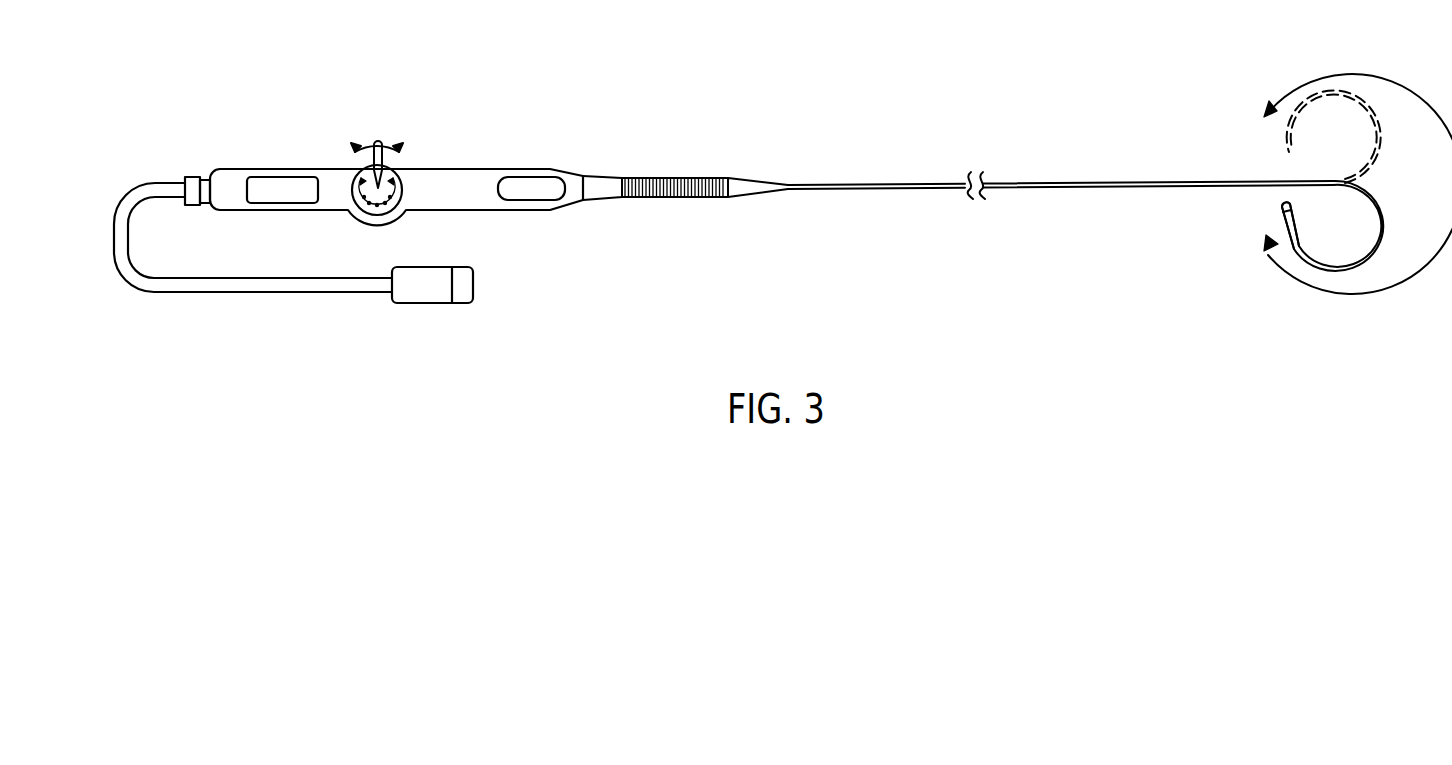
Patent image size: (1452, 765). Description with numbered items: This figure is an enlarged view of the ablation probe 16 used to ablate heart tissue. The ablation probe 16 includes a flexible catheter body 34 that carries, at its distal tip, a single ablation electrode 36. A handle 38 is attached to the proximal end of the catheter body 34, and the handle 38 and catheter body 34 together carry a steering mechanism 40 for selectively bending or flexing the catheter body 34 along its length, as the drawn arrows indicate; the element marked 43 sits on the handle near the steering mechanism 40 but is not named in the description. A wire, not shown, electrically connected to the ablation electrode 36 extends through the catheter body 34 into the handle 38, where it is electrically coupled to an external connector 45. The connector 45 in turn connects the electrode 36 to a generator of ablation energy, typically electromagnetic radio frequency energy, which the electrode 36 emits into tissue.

The ablation probe 16 is at (685, 153).
The flexible catheter body 34 is at (1037, 180).
The ablation electrode 36 is at (1280, 214).
The handle 38 is at (485, 200).
The steering mechanism 40 is at (380, 134).
The dial indicator 43 is at (405, 166).
The external connector 45 is at (435, 297).